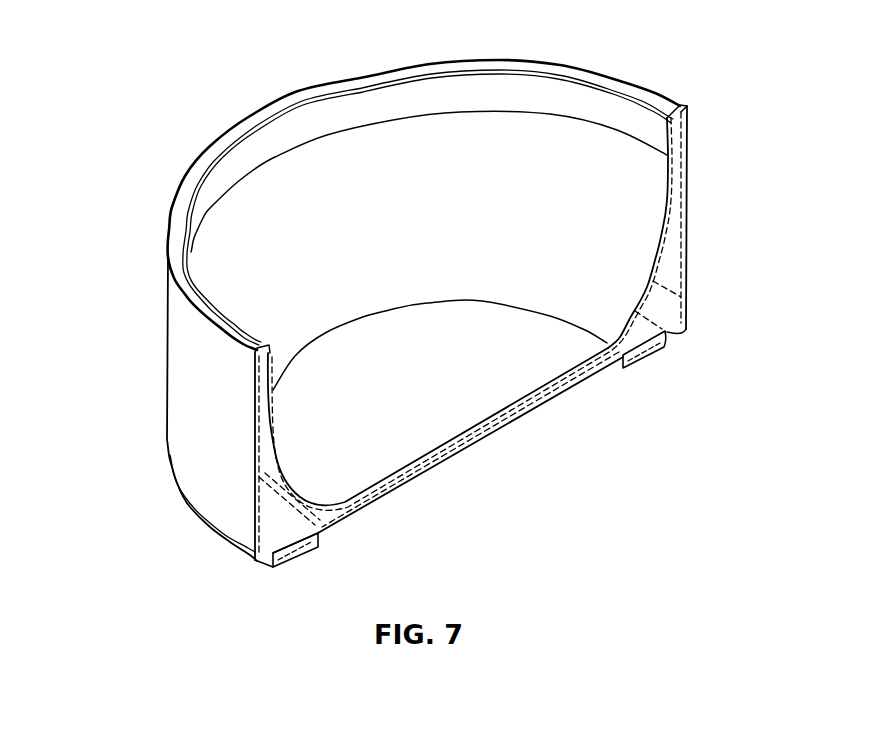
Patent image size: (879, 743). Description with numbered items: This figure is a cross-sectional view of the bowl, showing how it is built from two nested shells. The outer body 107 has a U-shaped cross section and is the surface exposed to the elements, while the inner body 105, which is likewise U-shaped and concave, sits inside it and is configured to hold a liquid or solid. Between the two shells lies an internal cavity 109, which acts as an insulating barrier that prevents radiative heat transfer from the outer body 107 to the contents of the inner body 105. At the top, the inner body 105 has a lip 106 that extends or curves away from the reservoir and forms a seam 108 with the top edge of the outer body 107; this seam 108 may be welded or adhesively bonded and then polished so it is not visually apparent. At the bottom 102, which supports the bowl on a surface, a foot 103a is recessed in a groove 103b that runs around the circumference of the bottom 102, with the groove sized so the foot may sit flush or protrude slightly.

The bottom 102 is at (516, 424).
The foot 103a is at (639, 349).
The groove 103b is at (645, 328).
The inner body 105 is at (664, 199).
The lip 106 is at (681, 106).
The outer body 107 is at (689, 237).
The seam 108 is at (197, 318).
The internal cavity 109 is at (674, 270).